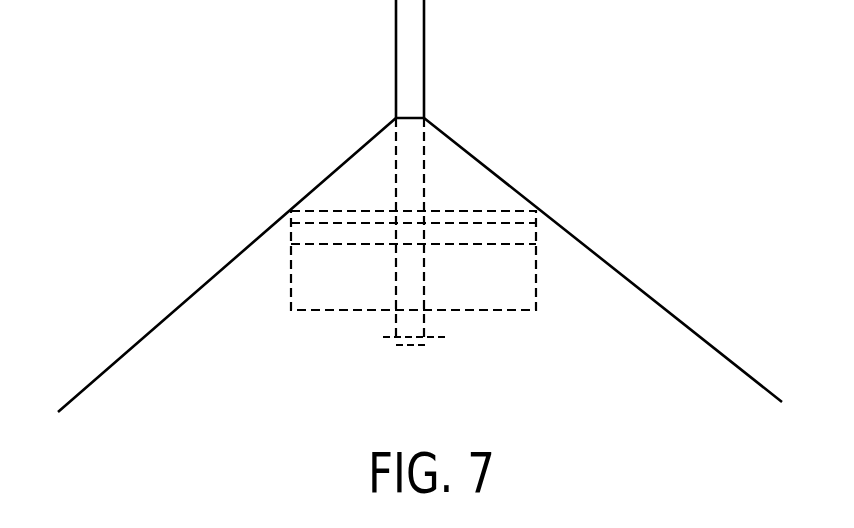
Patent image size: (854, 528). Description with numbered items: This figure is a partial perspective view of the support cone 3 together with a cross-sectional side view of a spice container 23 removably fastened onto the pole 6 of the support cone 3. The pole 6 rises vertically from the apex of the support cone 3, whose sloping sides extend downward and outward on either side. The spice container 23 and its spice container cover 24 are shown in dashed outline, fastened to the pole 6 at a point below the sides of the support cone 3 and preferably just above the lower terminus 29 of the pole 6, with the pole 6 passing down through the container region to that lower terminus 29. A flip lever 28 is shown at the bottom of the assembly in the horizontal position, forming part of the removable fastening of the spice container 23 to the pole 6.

The pole 6 is at (432, 76).
The support cone 3 is at (584, 226).
The spice container 23 is at (274, 234).
The spice container cover 24 is at (336, 199).
The lower terminus 29 is at (386, 289).
The flip lever 28 is at (366, 334).